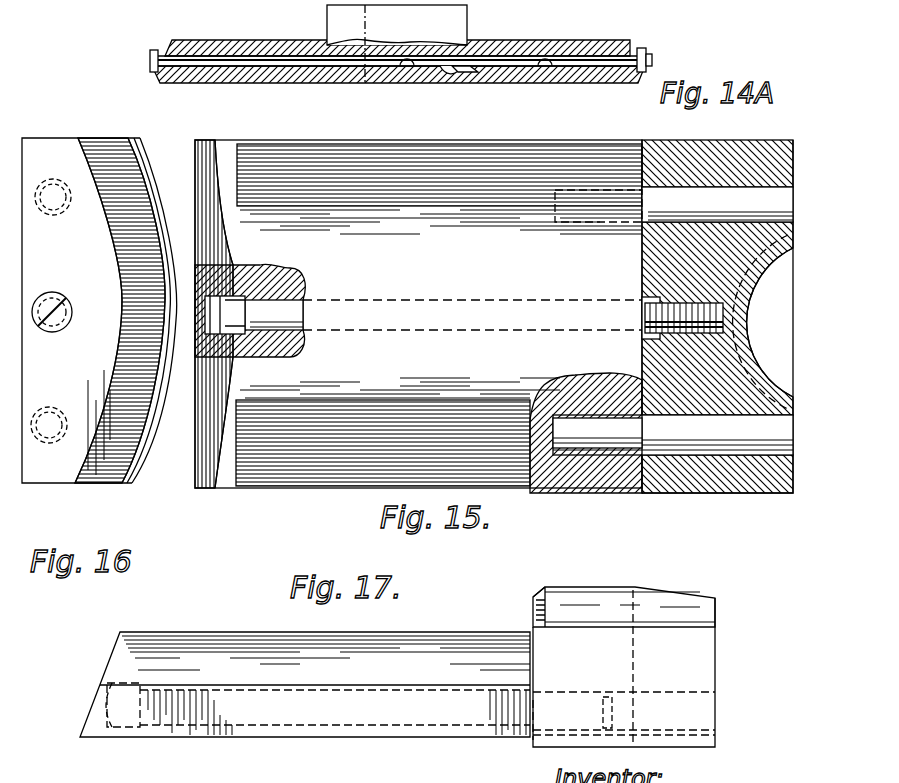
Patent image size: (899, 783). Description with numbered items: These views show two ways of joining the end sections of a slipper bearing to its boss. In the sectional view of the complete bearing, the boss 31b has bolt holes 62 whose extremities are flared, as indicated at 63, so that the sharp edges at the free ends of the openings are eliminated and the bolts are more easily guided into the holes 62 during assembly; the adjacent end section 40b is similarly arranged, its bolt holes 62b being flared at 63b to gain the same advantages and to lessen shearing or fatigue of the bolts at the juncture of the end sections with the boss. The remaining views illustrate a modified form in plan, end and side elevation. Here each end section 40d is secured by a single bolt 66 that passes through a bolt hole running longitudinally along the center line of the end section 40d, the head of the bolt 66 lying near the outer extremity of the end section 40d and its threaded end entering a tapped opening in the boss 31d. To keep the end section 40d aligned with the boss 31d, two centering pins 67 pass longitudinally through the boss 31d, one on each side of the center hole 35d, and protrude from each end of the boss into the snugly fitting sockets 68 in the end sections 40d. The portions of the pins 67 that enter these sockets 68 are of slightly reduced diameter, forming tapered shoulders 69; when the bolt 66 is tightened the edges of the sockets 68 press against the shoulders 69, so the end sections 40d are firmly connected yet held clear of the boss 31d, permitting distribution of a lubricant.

In FIG. 14A, the end section 40b is at (538, 48).
In FIG. 14A, the boss 31b is at (458, 31).
In FIG. 14A, the bolt holes 62 is at (406, 76).
In FIG. 14A, the flared extremities 63 is at (457, 78).
In FIG. 14A, the flared extremities 63b is at (476, 72).
In FIG. 14A, the bolt holes 62b is at (545, 72).
In FIG. 16, the end section 40d is at (100, 442).
In FIG. 15, the end section 40d is at (320, 134).
In FIG. 17, the end section 40d is at (206, 640).
In FIG. 16, the boss 31d is at (145, 462).
In FIG. 15, the boss 31d is at (690, 136).
In FIG. 17, the boss 31d is at (573, 600).
In FIG. 15, the center hole 35d is at (745, 330).
In FIG. 17, the center hole 35d is at (650, 612).
In FIG. 16, the bolt 66 is at (62, 328).
In FIG. 15, the bolt 66 is at (292, 300).
In FIG. 17, the bolt 66 is at (288, 732).
In FIG. 16, the centering pins 67 is at (55, 214).
In FIG. 15, the centering pins 67 is at (731, 196).
In FIG. 17, the centering pins 67 is at (589, 692).
In FIG. 16, the pin hole 68 is at (53, 180).
In FIG. 15, the pin hole 68 is at (560, 222).
In FIG. 17, the pin hole 68 is at (505, 700).
In FIG. 15, the tapered shoulders 69 is at (642, 222).
In FIG. 17, the tapered shoulders 69 is at (532, 685).